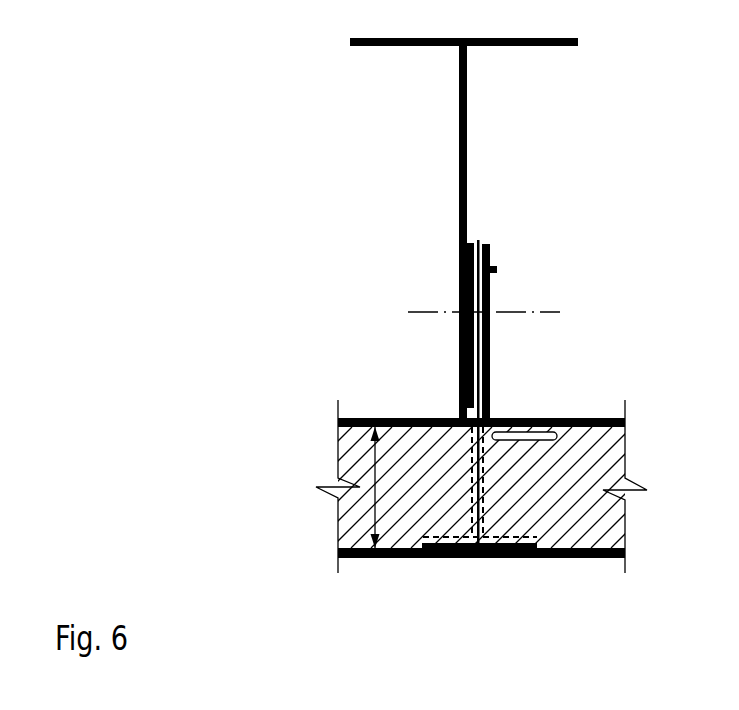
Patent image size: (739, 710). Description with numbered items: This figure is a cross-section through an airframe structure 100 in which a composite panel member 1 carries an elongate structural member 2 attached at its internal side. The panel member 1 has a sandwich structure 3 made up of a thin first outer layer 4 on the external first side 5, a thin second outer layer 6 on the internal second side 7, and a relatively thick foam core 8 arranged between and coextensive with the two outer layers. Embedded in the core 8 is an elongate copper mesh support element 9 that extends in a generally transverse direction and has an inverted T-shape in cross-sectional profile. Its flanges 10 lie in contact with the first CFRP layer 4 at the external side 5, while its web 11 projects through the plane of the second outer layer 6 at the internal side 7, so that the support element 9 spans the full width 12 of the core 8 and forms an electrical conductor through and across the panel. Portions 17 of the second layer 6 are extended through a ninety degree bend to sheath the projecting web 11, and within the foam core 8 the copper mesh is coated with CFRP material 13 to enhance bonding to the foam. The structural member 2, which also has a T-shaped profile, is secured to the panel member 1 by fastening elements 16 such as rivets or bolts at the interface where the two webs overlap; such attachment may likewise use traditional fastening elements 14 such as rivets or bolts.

The airframe structure 100 is at (328, 96).
The composite panel member 1 is at (357, 594).
The elongate structural member 2 is at (492, 126).
The sandwich structure 3 is at (645, 424).
The first outer layer 4 is at (408, 577).
The first side 5 is at (570, 595).
The second outer layer 6 is at (515, 405).
The second side 7 is at (600, 389).
The core 8 is at (331, 524).
The support element 9 is at (463, 426).
The flanges 10 is at (495, 558).
The web 11 is at (477, 243).
The full width 12 is at (372, 455).
The CFRP material 13 is at (510, 527).
The fastening elements 14 is at (560, 312).
The fastening elements 16 is at (548, 425).
The portions of the second layer 17 is at (497, 267).